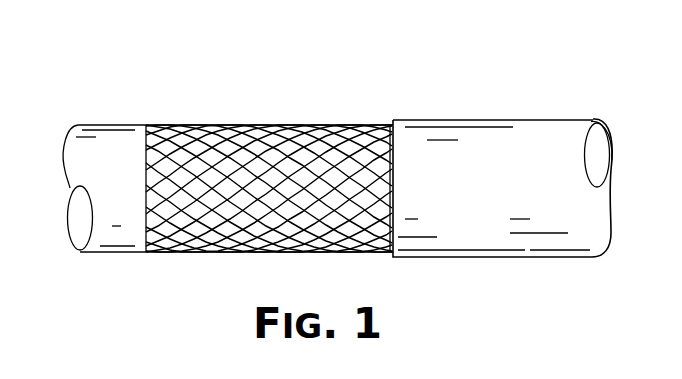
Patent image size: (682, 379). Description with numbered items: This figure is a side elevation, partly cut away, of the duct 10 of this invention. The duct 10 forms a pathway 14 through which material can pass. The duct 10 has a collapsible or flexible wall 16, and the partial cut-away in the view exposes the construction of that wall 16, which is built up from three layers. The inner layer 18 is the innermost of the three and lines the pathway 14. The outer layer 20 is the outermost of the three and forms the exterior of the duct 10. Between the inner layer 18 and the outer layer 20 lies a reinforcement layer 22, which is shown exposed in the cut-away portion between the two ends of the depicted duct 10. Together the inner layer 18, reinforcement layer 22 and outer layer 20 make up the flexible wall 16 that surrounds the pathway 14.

The duct 10 is at (372, 151).
The pathway 14 is at (380, 194).
The collapsible or flexible wall 16 is at (616, 125).
The inner layer 18 is at (114, 125).
The outer layer 20 is at (530, 133).
The reinforcement layer 22 is at (235, 143).